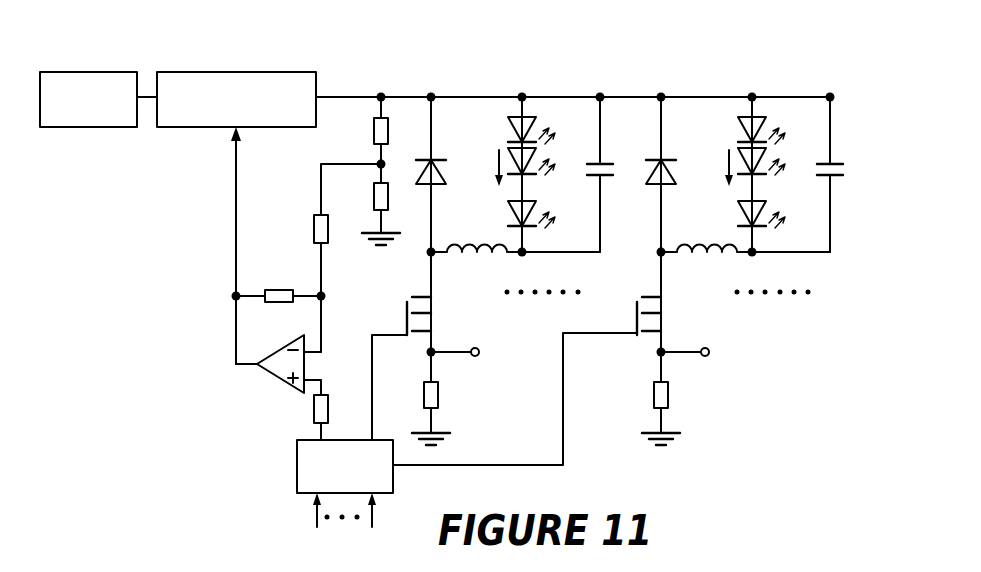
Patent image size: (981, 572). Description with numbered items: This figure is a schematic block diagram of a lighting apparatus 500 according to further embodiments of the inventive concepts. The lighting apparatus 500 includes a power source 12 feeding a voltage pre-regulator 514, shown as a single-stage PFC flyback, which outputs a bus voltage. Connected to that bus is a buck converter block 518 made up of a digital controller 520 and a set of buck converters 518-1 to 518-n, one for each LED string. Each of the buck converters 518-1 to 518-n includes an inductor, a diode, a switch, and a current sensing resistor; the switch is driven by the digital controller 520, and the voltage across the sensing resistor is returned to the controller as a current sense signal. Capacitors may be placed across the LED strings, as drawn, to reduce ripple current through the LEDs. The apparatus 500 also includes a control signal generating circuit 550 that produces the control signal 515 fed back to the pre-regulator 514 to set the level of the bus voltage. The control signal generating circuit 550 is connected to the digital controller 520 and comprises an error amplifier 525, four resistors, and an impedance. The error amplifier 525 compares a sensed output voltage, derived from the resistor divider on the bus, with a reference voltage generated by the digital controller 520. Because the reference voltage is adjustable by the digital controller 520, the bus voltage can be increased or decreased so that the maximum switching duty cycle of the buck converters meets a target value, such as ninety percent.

The power source 12 is at (88, 72).
The voltage pre-regulator 514 is at (240, 72).
The feedback control signal to flyback converter 515 is at (232, 131).
The buck converter block 518 is at (628, 78).
The buck converter 518-1 is at (462, 358).
The buck converter 518-n is at (705, 367).
The lighting apparatus 500 is at (795, 58).
The control signal generating circuit 550 is at (218, 262).
The error amplifier 525 is at (272, 356).
The digital controller 520 is at (297, 462).